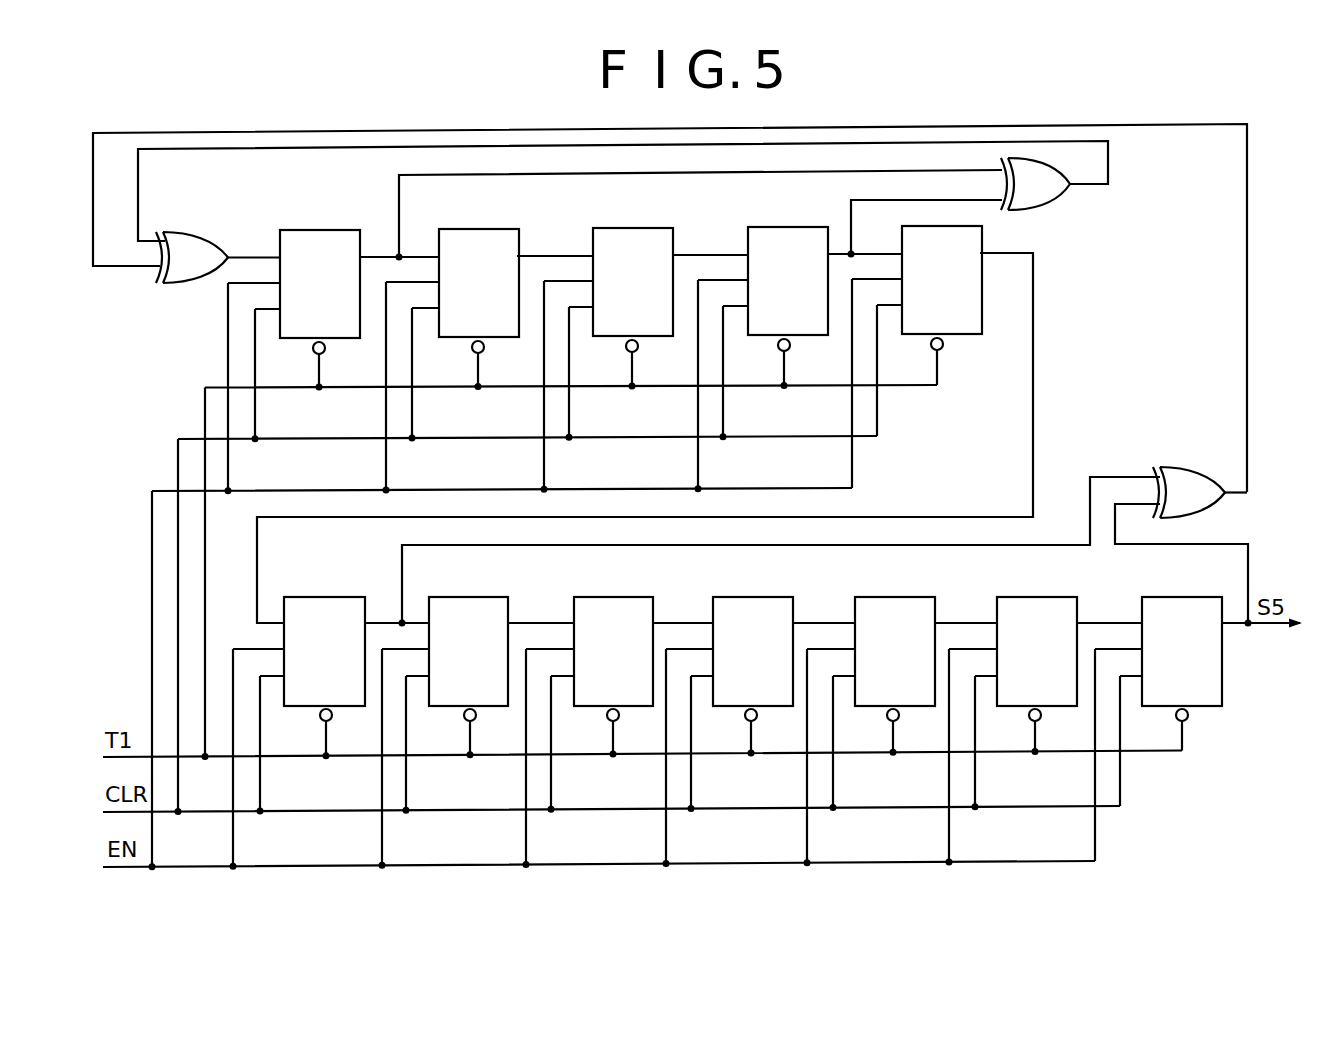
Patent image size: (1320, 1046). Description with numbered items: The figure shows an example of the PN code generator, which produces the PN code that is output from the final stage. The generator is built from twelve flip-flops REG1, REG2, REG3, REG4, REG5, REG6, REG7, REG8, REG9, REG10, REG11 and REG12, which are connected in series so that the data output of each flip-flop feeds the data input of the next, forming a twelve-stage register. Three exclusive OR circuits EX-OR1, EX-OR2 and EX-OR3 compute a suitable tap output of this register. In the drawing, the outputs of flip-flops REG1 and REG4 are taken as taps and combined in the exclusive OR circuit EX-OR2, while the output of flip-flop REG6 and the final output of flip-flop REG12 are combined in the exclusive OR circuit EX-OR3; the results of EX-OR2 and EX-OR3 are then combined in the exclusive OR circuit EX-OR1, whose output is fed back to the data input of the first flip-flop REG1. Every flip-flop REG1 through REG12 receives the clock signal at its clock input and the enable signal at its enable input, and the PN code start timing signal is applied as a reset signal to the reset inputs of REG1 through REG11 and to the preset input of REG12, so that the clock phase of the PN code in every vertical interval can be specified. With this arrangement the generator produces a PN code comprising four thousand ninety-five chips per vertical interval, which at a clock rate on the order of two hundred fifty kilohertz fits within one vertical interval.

The flip-flop REG1 is at (313, 229).
The flip-flop REG2 is at (478, 228).
The flip-flop REG3 is at (632, 228).
The flip-flop REG4 is at (783, 225).
The flip-flop REG5 is at (965, 336).
The flip-flop REG6 is at (323, 596).
The flip-flop REG7 is at (467, 596).
The flip-flop REG8 is at (612, 596).
The flip-flop REG9 is at (751, 596).
The flip-flop REG10 is at (893, 596).
The flip-flop REG11 is at (1035, 596).
The flip-flop REG12 is at (1180, 596).
The exclusive OR circuit EX-OR1 is at (195, 227).
The exclusive OR circuit EX-OR2 is at (1047, 209).
The exclusive OR circuit EX-OR3 is at (1168, 463).